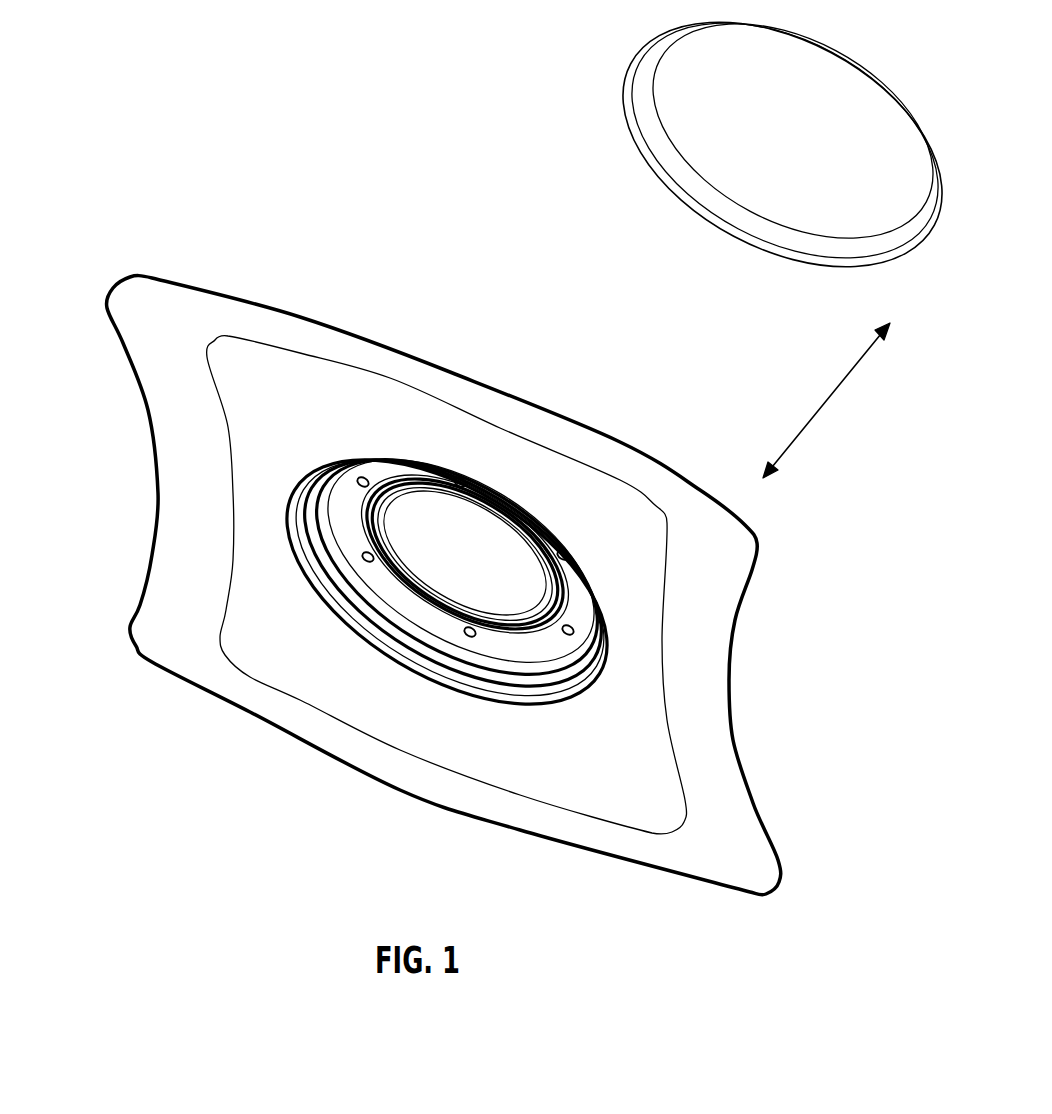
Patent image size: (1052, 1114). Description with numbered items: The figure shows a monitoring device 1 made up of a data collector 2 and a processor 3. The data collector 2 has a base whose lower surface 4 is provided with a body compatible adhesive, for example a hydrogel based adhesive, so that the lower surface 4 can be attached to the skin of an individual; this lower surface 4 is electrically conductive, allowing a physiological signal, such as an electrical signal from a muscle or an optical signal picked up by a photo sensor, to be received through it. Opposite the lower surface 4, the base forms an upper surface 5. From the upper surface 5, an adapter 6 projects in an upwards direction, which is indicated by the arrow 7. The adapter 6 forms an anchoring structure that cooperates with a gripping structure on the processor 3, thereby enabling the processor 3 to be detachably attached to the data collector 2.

The monitoring device 1 is at (267, 44).
The data collector 2 is at (410, 568).
The processor 3 is at (860, 100).
The lower surface 4 is at (139, 568).
The upper surface 5 is at (187, 333).
The adapter 6 is at (577, 595).
The arrow 7 is at (825, 405).